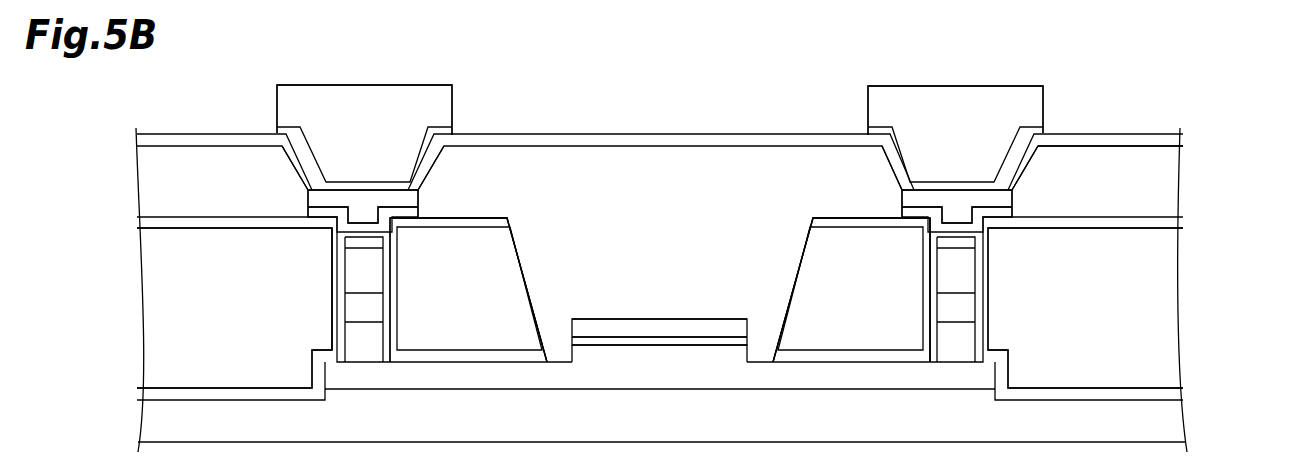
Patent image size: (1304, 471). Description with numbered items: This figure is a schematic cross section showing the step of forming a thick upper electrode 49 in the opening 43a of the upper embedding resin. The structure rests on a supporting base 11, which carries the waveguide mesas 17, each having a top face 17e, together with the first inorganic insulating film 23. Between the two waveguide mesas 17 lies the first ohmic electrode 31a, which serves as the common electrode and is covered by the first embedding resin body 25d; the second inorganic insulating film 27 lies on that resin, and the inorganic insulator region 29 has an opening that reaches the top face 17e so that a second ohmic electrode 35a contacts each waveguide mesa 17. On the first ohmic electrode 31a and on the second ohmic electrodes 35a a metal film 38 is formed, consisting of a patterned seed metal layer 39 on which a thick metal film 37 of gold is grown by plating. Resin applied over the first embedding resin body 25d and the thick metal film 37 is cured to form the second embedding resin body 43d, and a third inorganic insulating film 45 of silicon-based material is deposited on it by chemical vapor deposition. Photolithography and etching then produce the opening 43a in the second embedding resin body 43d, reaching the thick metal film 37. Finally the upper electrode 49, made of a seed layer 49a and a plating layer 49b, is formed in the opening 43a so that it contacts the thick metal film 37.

The supporting base 11 is at (1182, 428).
The waveguide mesa 17 is at (350, 363).
The top face of the waveguide mesa 17e is at (409, 147).
The first inorganic insulating film 23 is at (157, 397).
The first embedding resin body 25d is at (177, 287).
The second inorganic insulating film 27 is at (423, 222).
The inorganic insulator region 29 is at (540, 72).
The first ohmic electrode 31a is at (682, 353).
The second ohmic electrode 35a is at (332, 242).
The thick metal film 37 is at (370, 230).
The metal film 38 is at (397, 52).
The seed metal layer 39 is at (327, 203).
The opening 43a is at (407, 176).
The second embedding resin body 43d is at (1163, 187).
The third inorganic insulating film 45 is at (163, 133).
The upper electrode 49 is at (267, 53).
The seed layer 49a is at (277, 107).
The plating layer 49b is at (297, 85).